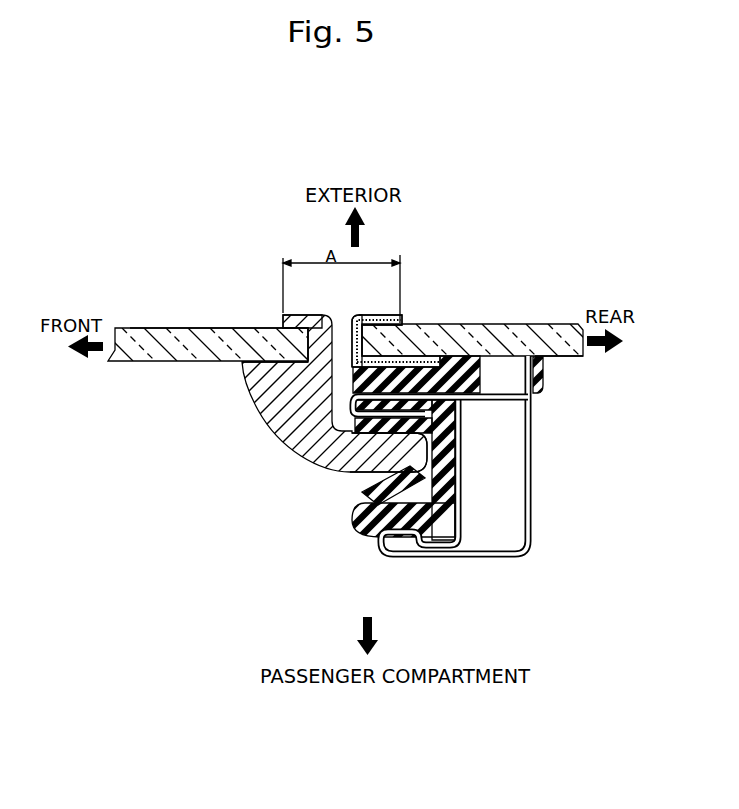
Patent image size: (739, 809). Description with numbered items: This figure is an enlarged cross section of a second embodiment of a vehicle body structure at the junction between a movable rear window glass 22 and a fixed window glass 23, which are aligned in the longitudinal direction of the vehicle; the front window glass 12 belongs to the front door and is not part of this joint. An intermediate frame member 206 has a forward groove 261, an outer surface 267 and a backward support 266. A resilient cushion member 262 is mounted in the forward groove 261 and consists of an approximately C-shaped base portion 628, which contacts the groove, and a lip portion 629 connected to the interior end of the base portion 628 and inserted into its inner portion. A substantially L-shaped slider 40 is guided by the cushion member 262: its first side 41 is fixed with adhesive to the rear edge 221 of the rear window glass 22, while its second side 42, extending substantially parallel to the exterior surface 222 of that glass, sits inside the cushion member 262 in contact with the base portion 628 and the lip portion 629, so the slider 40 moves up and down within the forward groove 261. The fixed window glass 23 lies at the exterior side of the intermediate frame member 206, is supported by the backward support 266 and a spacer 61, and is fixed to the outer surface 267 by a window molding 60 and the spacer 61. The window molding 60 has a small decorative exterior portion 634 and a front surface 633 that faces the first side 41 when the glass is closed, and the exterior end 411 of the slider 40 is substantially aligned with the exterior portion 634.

The front window glass 12 is at (535, 362).
The rear window glass 22 is at (127, 345).
The rear edge 221 is at (290, 343).
The exterior surface 222 is at (205, 328).
The fixed window glass 23 is at (512, 350).
The slider 40 is at (262, 405).
The first side 41 is at (245, 372).
The exterior end 411 is at (282, 312).
The second side 42 is at (400, 447).
The window molding 60 is at (360, 316).
The spacer 61 is at (444, 372).
The front surface 633 is at (322, 318).
The exterior portion 634 is at (383, 315).
The intermediate frame member 206 is at (397, 562).
The forward groove 261 is at (436, 548).
The cushion member 262 is at (358, 510).
The backward support 266 is at (531, 372).
The outer surface 267 is at (470, 394).
The base portion 628 is at (462, 487).
The lip portion 629 is at (387, 480).